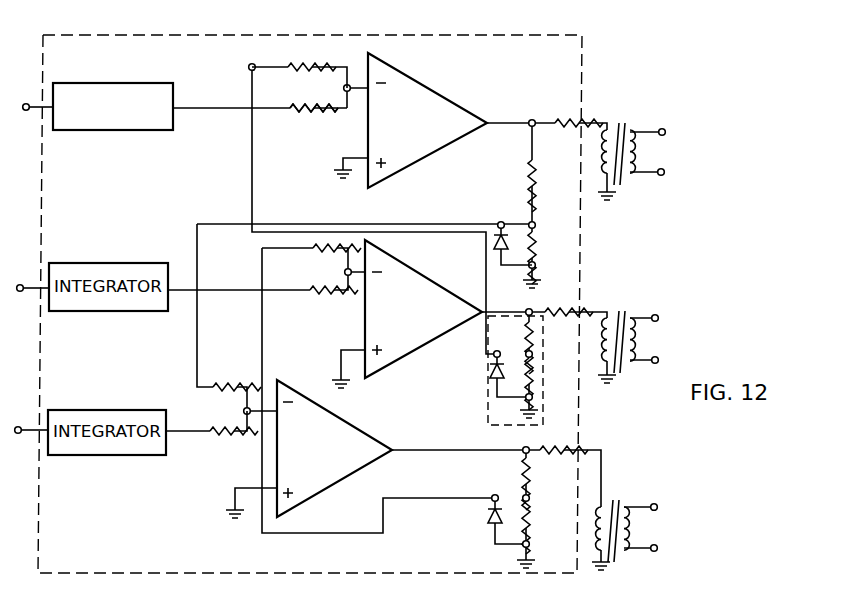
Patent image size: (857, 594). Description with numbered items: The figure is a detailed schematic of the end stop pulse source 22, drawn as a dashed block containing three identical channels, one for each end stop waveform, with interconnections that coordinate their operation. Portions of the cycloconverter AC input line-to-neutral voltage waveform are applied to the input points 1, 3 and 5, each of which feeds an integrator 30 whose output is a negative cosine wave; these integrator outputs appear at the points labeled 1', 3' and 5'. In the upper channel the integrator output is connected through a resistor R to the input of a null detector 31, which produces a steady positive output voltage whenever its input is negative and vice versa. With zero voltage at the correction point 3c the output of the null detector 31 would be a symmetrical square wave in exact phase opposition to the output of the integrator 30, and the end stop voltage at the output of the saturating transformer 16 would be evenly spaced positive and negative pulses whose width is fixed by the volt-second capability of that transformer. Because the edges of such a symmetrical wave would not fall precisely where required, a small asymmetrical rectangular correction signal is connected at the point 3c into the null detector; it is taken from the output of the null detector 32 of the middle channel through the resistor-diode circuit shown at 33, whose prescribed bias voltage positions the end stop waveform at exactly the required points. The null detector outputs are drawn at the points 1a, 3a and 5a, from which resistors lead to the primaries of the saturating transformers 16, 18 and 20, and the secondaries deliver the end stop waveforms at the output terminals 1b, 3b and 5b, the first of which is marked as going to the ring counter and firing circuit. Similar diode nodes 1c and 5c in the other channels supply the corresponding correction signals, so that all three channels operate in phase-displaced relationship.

The input point 1 is at (38, 98).
The integrated signal 1' is at (260, 99).
The input point 3 is at (33, 279).
The integrated signal 3' is at (266, 281).
The input point 5 is at (31, 421).
The integrated signal 5' is at (206, 421).
The correction signal point 3c is at (250, 58).
The resistor R is at (299, 102).
The integrator 30 is at (166, 82).
The null detector 31 is at (441, 82).
The null detector 32 is at (440, 277).
The resistor-diode circuit 33 is at (487, 406).
The output node 1a is at (530, 120).
The output terminal 1b to ring counter and firing circuit 1b is at (664, 129).
The clamp node 1c is at (500, 218).
The output node 3a is at (520, 311).
The output terminal 3b is at (659, 307).
The output node 5a is at (518, 448).
The output terminal 5b is at (660, 499).
The clamp node 5c is at (495, 494).
The saturating transformer 16 is at (621, 125).
The saturating transformer 18 is at (618, 310).
The saturating transformer 20 is at (616, 488).
The end stop pulse source 22 is at (583, 63).